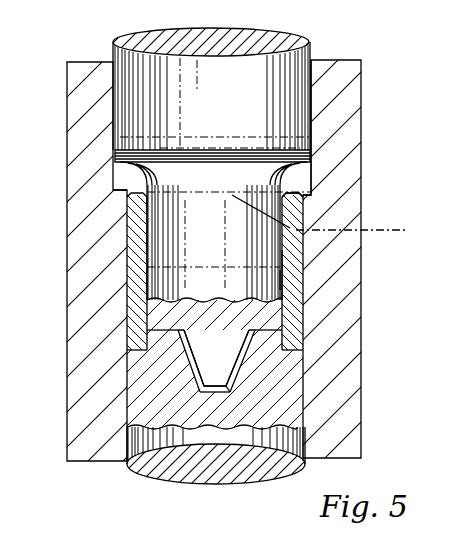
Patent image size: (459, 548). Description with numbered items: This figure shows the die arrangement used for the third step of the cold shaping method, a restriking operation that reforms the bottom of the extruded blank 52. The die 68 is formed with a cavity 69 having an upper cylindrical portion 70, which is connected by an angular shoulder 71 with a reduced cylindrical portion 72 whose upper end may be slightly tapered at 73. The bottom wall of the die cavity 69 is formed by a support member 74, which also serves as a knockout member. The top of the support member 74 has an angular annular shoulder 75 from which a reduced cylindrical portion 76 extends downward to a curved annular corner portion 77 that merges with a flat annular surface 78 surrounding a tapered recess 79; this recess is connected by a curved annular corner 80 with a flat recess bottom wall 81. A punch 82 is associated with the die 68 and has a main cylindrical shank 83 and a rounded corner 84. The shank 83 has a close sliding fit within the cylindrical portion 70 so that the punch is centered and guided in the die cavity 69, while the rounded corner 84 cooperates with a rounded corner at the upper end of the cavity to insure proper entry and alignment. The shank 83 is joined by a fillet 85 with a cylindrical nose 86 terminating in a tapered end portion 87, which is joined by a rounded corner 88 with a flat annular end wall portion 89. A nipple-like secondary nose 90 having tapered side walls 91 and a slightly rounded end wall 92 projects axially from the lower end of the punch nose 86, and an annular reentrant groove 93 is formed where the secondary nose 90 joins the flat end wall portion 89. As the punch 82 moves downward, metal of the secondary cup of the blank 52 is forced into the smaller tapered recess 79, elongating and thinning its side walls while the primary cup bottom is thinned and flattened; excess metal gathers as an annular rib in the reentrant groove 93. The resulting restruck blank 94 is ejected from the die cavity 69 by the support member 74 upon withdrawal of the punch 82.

The extruded blank 52 is at (330, 216).
The die 68 is at (337, 76).
The die cavity 69 is at (311, 116).
The upper cylindrical portion 70 is at (312, 176).
The angular shoulder 71 is at (305, 197).
The reduced cylindrical portion 72 is at (303, 263).
The tapered upper end 73 is at (302, 211).
The support member 74 is at (230, 455).
The angular annular shoulder 75 is at (303, 325).
The reduced cylindrical portion 76 is at (305, 348).
The curved annular corner portion 77 is at (242, 385).
The flat annular surface 78 is at (233, 395).
The tapered recess 79 is at (240, 398).
The curved annular corner 80 is at (250, 412).
The recess bottom wall 81 is at (215, 398).
The punch 82 is at (282, 44).
The main cylindrical shank 83 is at (133, 80).
The rounded corner 84 is at (113, 153).
The fillet 85 is at (128, 178).
The cylindrical nose 86 is at (180, 221).
The tapered end portion 87 is at (148, 302).
The rounded corner 88 is at (150, 339).
The flat annular end wall portion 89 is at (185, 397).
The secondary nose 90 is at (165, 420).
The tapered side walls 91 is at (190, 393).
The rounded end wall 92 is at (232, 393).
The annular reentrant groove 93 is at (188, 340).
The restruck blank 94 is at (290, 278).